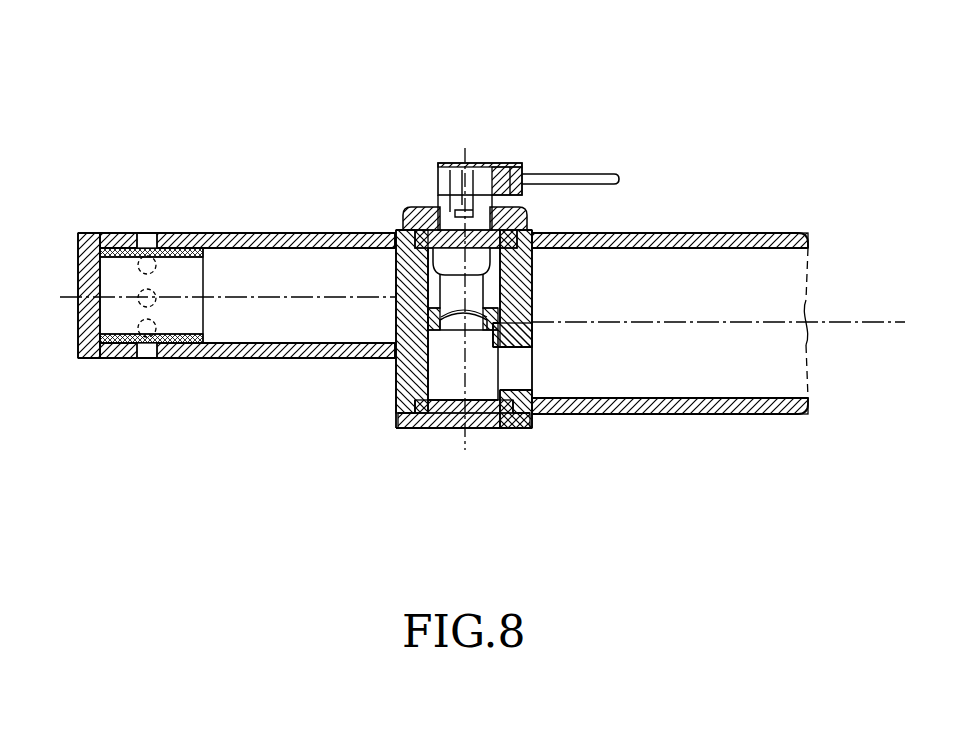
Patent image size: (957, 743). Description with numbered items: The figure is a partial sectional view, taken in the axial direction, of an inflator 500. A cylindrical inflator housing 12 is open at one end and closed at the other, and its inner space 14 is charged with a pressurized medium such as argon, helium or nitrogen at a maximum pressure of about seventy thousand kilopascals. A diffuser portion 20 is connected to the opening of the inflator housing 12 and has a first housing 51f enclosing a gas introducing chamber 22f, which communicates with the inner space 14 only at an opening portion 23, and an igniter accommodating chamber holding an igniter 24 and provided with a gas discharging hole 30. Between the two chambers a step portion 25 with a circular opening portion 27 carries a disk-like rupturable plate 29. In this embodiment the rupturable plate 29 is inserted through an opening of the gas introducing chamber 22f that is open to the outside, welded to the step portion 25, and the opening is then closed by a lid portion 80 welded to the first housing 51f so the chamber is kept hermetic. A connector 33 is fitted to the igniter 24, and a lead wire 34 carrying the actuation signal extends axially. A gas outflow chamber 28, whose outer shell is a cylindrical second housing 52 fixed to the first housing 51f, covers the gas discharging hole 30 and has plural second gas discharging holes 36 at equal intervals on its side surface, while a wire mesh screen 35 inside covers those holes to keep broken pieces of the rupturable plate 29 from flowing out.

The inflator housing 12 is at (703, 414).
The inner space 14 is at (690, 304).
The diffuser portion 20 is at (242, 223).
The gas introducing chamber 22f is at (478, 412).
The opening portion 23 is at (510, 385).
The igniter 24 is at (405, 215).
The step portion 25 is at (532, 328).
The circular opening portion 27 is at (395, 318).
The gas outflow chamber 28 is at (282, 287).
The rupturable plate 29 is at (534, 288).
The gas discharging hole 30 is at (398, 288).
The connector 33 is at (497, 163).
The lead wire 34 is at (590, 172).
The screen 35 is at (185, 233).
The second gas discharging holes 36 is at (145, 233).
The first housing 51f is at (398, 380).
The second housing 52 is at (212, 233).
The lid portion 80 is at (418, 420).
The inflator 500 is at (262, 455).